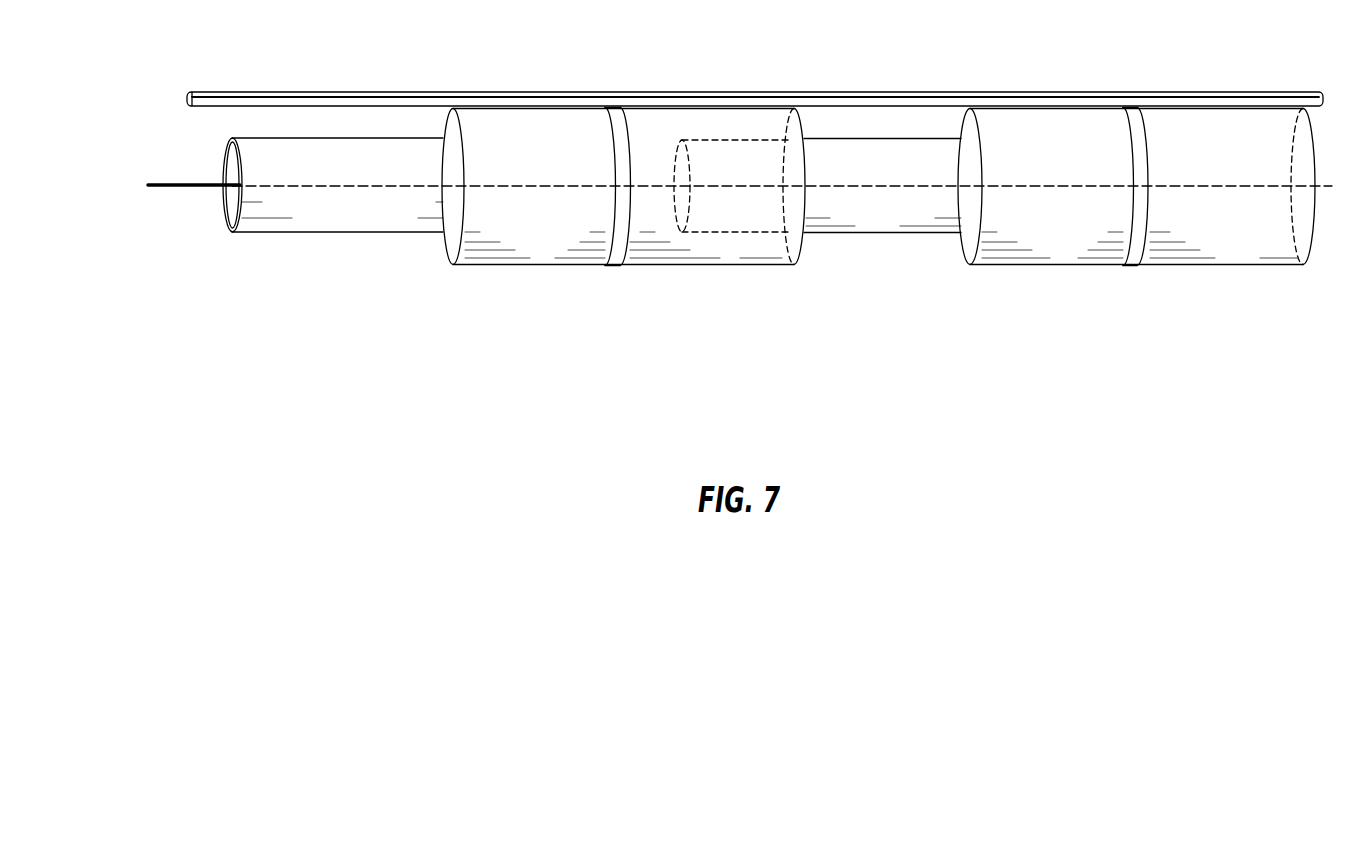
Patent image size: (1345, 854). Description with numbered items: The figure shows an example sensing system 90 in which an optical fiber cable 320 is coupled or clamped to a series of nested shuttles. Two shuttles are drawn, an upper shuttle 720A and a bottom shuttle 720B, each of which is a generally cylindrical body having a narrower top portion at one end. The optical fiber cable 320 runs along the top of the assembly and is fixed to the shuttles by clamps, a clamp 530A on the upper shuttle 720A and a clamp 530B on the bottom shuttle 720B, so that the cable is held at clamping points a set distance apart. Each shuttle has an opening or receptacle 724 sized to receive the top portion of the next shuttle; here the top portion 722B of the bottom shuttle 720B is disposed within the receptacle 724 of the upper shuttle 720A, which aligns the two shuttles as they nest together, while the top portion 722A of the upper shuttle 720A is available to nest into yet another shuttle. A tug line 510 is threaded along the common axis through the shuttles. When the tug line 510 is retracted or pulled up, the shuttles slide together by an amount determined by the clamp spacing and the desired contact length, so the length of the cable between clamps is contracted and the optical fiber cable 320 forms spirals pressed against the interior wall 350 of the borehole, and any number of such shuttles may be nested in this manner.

The sensing system 90 is at (160, 93).
The interior wall 350 is at (405, 92).
The optical fiber cable 320 is at (540, 97).
The tug line 510 is at (175, 189).
The top portion of upper shuttle 722A is at (337, 233).
The upper shuttle 720A is at (518, 266).
The clamp on upper shuttle 530A is at (610, 266).
The opening or receptacle 724 is at (793, 253).
The top portion of bottom shuttle 722B is at (872, 233).
The bottom shuttle 720B is at (1237, 266).
The clamp on bottom shuttle 530B is at (1128, 266).